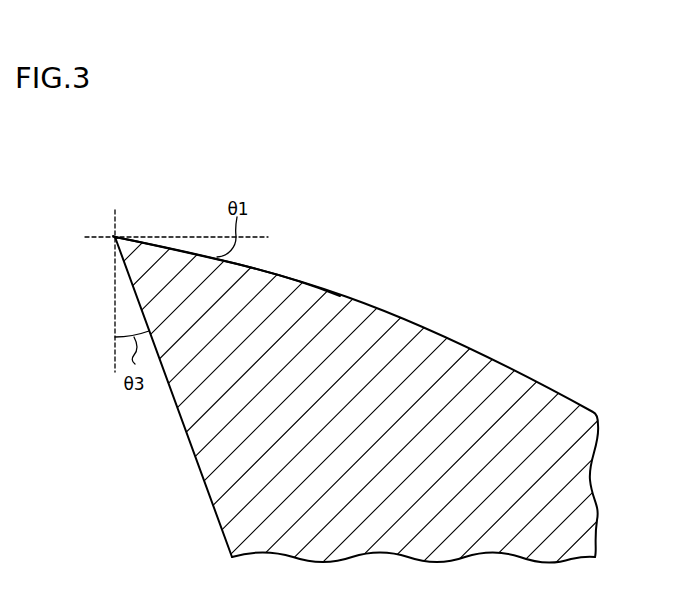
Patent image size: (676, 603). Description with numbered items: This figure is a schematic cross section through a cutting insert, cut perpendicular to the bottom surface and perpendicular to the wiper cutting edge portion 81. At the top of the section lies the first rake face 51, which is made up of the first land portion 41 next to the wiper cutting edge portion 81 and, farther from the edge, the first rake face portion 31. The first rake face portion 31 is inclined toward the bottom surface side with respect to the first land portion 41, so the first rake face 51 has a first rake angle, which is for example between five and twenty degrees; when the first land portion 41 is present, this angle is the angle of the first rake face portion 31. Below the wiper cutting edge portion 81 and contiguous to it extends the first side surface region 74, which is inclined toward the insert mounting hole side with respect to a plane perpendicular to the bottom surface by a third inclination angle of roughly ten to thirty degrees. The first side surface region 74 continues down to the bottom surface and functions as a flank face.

The first rake face 51 is at (134, 149).
The first land portion 41 is at (127, 236).
The first rake face portion 31 is at (298, 280).
The wiper cutting edge portion 81 is at (115, 236).
The first side surface region 74 is at (177, 408).